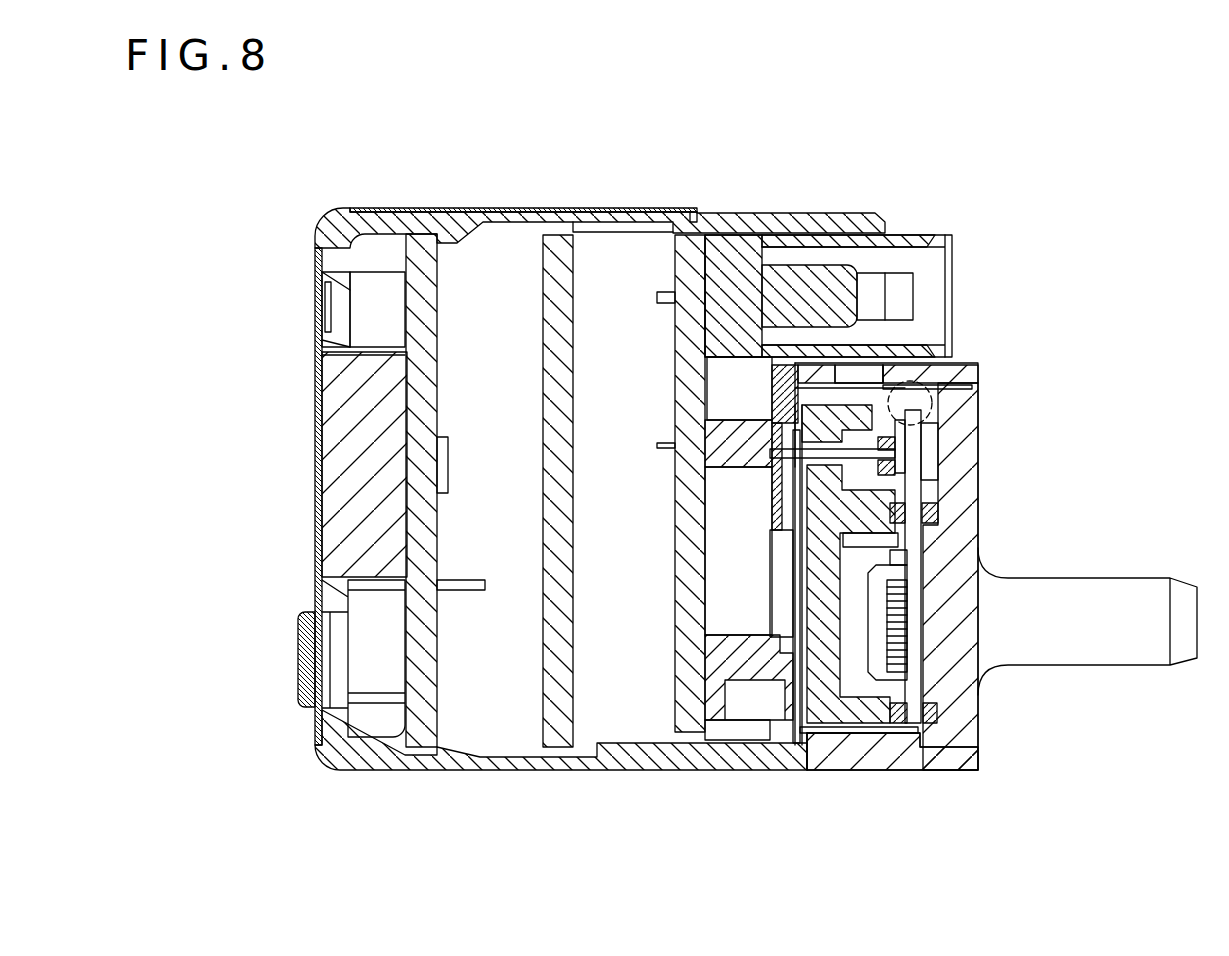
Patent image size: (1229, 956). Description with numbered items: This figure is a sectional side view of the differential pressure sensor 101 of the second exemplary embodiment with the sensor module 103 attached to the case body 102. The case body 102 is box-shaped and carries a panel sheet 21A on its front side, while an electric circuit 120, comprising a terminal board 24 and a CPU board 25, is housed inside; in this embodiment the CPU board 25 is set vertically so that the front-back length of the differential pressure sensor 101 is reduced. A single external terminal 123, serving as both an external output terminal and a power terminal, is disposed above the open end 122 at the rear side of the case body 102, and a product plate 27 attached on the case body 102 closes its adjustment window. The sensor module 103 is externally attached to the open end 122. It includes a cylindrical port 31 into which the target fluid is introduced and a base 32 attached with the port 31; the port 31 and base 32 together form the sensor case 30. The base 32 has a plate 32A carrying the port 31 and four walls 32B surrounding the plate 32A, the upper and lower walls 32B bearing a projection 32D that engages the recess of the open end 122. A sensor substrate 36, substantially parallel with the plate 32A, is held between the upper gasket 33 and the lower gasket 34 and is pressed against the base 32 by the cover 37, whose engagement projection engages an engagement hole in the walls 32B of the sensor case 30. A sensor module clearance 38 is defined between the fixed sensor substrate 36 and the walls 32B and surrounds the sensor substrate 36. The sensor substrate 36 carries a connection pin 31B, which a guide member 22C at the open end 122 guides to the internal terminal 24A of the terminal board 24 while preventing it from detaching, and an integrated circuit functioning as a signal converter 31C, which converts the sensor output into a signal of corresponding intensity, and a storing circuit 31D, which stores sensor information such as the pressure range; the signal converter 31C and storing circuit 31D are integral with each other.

The differential pressure sensor 101 is at (728, 100).
The case body 102 is at (484, 146).
The sensor module 103 is at (1097, 375).
The electric circuit 120 is at (607, 278).
The open end 122 is at (978, 395).
The external terminal 123 is at (930, 250).
The panel sheet 21A is at (318, 484).
The guide member 22C is at (785, 380).
The terminal board 24 is at (675, 485).
The internal terminal 24A is at (738, 420).
The CPU board 25 is at (542, 448).
The product plate 27 is at (522, 207).
The sensor case 30 is at (1084, 814).
The port 31 is at (1140, 668).
The connection pin 31B is at (975, 455).
The signal converter 31C is at (858, 700).
The storing circuit 31D is at (859, 646).
The base 32 is at (1057, 750).
The plate 32A is at (980, 735).
The walls 32B is at (935, 390).
The projection 32D is at (875, 380).
The upper gasket 33 is at (975, 540).
The lower gasket 34 is at (975, 508).
The sensor substrate 36 is at (913, 668).
The cover 37 is at (825, 720).
The sensor module clearance 38 is at (975, 418).